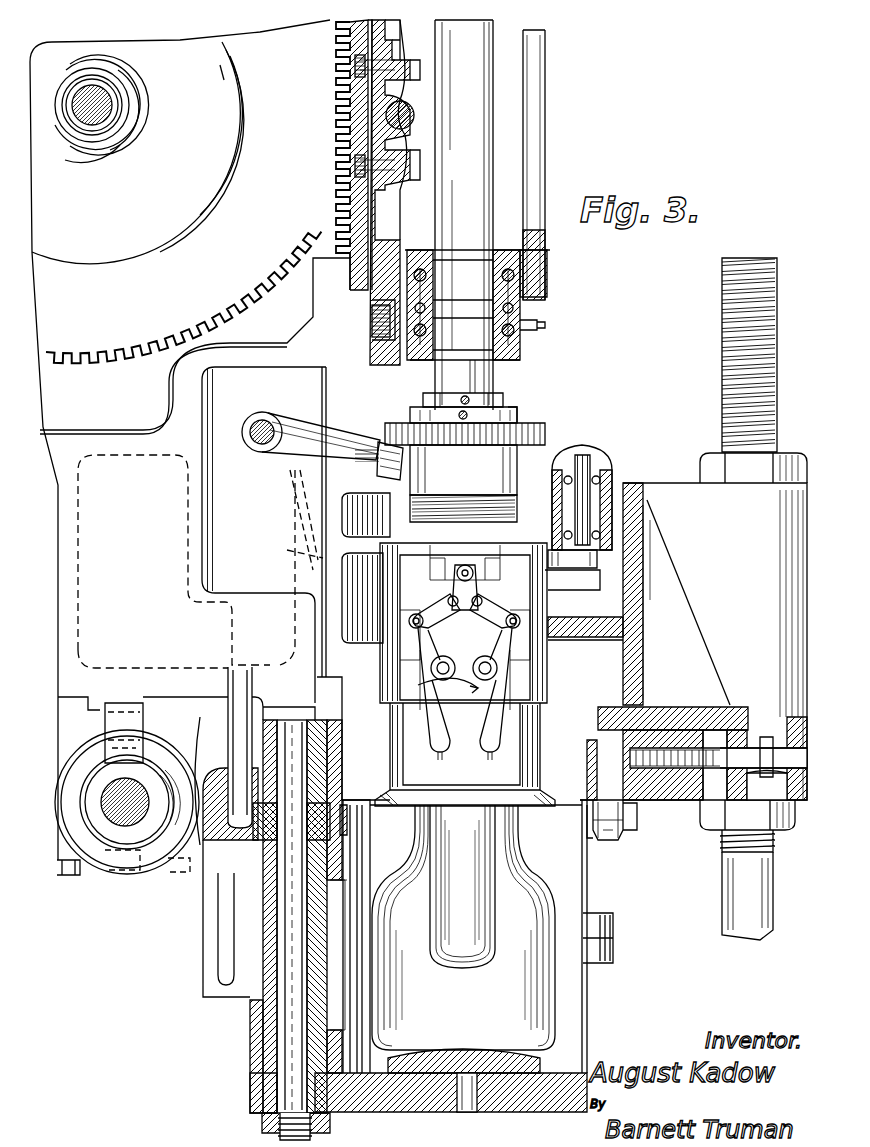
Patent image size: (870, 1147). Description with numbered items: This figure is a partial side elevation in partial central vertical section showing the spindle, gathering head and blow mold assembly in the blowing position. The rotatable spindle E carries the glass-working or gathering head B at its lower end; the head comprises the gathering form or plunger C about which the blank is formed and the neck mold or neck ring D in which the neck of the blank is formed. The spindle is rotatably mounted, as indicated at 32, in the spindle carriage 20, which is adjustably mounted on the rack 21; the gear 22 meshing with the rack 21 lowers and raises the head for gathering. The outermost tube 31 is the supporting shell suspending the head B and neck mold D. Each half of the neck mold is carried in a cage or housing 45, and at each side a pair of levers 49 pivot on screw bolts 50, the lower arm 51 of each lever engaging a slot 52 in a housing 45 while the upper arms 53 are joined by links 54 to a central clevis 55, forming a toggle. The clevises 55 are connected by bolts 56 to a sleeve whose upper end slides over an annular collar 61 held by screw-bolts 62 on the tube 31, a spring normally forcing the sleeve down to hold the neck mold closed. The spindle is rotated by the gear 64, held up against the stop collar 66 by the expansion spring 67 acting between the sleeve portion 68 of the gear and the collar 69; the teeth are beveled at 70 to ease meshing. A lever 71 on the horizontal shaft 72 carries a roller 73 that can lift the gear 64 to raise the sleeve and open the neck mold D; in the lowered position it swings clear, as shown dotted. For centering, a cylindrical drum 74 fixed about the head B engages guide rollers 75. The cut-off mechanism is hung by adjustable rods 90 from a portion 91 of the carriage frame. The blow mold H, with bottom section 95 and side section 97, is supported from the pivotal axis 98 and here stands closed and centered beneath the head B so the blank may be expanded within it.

The spindle carriage 20 is at (546, 232).
The rack 21 is at (346, 236).
The gear 22 is at (183, 298).
The outermost tube 31 is at (494, 42).
The rotatable support 32 is at (533, 322).
The cage or housing 45 is at (390, 790).
The lever 49 is at (435, 685).
The screw bolt 50 is at (484, 662).
The lower arm 51 is at (432, 740).
The slot 52 is at (442, 756).
The upper arm 53 is at (400, 636).
The link 54 is at (432, 614).
The clevis 55 is at (466, 604).
The bolt 56 is at (457, 573).
The annular collar 61 is at (505, 398).
The screw-bolt 62 is at (465, 396).
The gear 64 is at (546, 430).
The stop collar 66 is at (520, 412).
The expansion spring 67 is at (445, 512).
The sleeve portion 68 is at (515, 478).
The collar 69 is at (500, 562).
The beveled teeth edges 70 is at (548, 425).
The lever 71 is at (318, 440).
The horizontal shaft 72 is at (270, 424).
The roller 73 is at (380, 454).
The cylindrical drum 74 is at (548, 606).
The guide roller 75 is at (562, 572).
The adjustable rod or bolt 90 is at (722, 904).
The portion of carriage frame 91 is at (805, 475).
The bottom section 95 is at (418, 1113).
The side section 97 is at (583, 1000).
The pivotal axis 98 is at (108, 830).
The gathering head B is at (480, 600).
The gathering form or plunger C is at (494, 938).
The neck mold or neck ring D is at (456, 805).
The rotatable spindle E is at (490, 388).
The blow mold or finishing mold H is at (586, 1018).